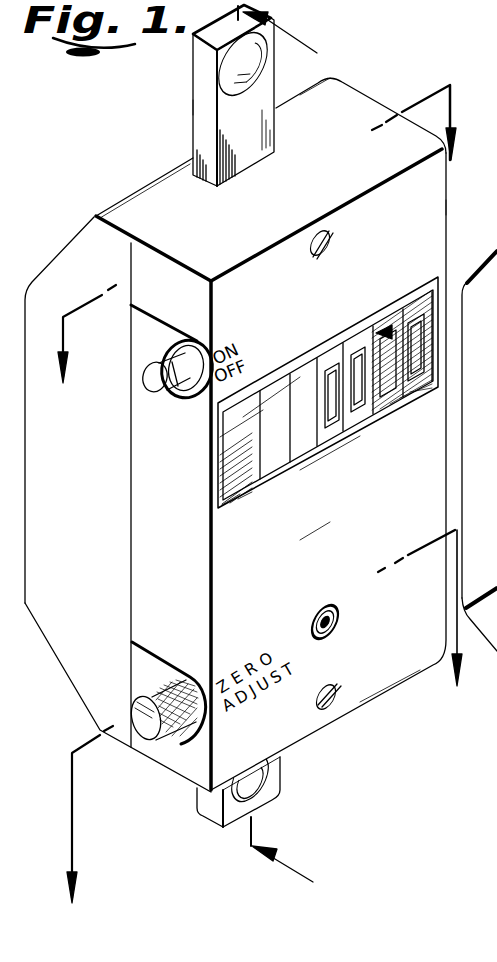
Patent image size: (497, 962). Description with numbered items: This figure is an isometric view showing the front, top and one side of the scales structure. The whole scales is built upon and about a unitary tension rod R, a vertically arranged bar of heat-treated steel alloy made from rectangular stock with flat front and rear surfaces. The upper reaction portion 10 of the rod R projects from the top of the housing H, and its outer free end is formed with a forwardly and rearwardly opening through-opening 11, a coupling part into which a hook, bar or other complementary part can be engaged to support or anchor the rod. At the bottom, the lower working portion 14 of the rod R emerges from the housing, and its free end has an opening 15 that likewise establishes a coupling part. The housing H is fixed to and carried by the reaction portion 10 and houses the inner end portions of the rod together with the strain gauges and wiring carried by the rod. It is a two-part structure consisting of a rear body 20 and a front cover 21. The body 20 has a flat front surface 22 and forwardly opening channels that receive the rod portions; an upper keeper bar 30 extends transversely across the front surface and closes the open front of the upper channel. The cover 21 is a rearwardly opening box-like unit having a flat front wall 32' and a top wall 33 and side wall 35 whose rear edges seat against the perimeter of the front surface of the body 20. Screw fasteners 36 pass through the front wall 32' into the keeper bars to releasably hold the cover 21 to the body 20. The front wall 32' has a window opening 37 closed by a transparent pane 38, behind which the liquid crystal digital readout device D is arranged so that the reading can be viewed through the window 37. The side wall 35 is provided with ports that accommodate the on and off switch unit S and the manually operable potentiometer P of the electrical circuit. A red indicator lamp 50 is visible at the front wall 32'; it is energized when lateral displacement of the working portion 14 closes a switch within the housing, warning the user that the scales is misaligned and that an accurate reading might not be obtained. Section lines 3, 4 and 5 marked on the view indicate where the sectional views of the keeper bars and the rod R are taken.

The upper reaction portion 10 is at (225, 127).
The through-opening 11 is at (236, 83).
The lower working portion 14 is at (205, 803).
The opening 15 is at (270, 774).
The body 20 is at (403, 62).
The cover 21 is at (452, 191).
The flat front surface 22 is at (170, 222).
The upper keeper bar 30 is at (495, 706).
The front wall 32' is at (392, 697).
The top wall 33 is at (273, 142).
The side wall 35 is at (151, 470).
The screw fasteners 36 is at (334, 241).
The window opening 37 is at (337, 447).
The transparent pane 38 is at (283, 452).
The indicator lamp 50 is at (343, 610).
The tension rod R is at (184, 109).
The on and off switch unit S is at (148, 355).
The potentiometer P is at (168, 680).
The liquid crystal digital readout device D is at (399, 303).
The housing H is at (301, 561).
The section line 3- 3 is at (271, 253).
The section line 4- 4 is at (260, 731).
The section line 5- 5 is at (298, 444).